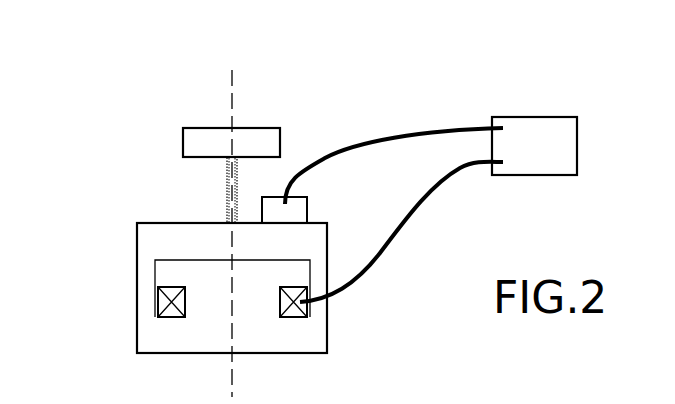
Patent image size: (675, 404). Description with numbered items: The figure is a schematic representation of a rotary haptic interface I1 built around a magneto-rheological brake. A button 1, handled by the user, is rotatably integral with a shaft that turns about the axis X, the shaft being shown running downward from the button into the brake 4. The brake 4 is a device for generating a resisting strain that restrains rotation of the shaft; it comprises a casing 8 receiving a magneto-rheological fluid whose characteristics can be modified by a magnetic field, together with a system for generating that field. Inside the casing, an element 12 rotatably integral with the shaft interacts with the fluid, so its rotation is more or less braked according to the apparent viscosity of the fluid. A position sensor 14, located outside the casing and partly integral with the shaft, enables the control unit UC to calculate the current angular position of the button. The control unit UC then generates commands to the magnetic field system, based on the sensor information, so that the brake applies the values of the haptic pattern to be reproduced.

The installation I1 is at (160, 100).
The axis X is at (232, 97).
The button 1 is at (273, 138).
The magneto-rheological brake 4 is at (128, 276).
The casing 8 is at (328, 332).
The element 12 is at (172, 244).
The position sensor 14 is at (300, 212).
The control unit UC is at (533, 130).